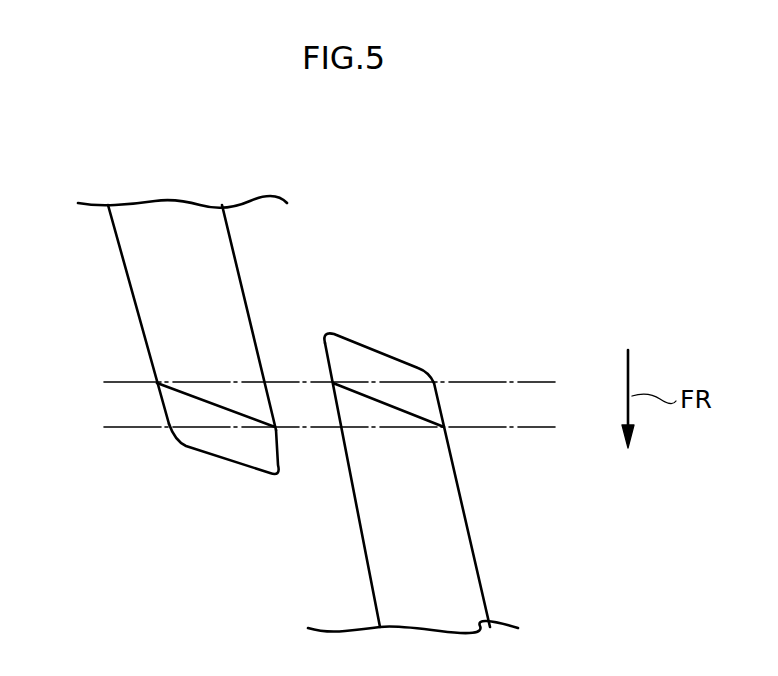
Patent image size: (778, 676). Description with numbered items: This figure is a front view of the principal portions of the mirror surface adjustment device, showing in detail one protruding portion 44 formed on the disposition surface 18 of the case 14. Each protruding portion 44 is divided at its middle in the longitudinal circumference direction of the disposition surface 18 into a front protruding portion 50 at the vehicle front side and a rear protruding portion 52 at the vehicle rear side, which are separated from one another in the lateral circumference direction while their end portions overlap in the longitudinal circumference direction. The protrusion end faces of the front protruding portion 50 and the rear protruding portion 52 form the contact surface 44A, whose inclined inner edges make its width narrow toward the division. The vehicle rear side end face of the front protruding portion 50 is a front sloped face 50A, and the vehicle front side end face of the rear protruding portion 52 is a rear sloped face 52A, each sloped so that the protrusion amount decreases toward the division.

The disposition surface 18 is at (363, 259).
The case 14 is at (298, 414).
The protruding portion 44 is at (240, 543).
The contact surface 44A is at (146, 285).
The front protruding portion 50 is at (383, 571).
The front sloped face 50A is at (370, 353).
The rear protruding portion 52 is at (227, 273).
The rear sloped face 52A is at (219, 439).